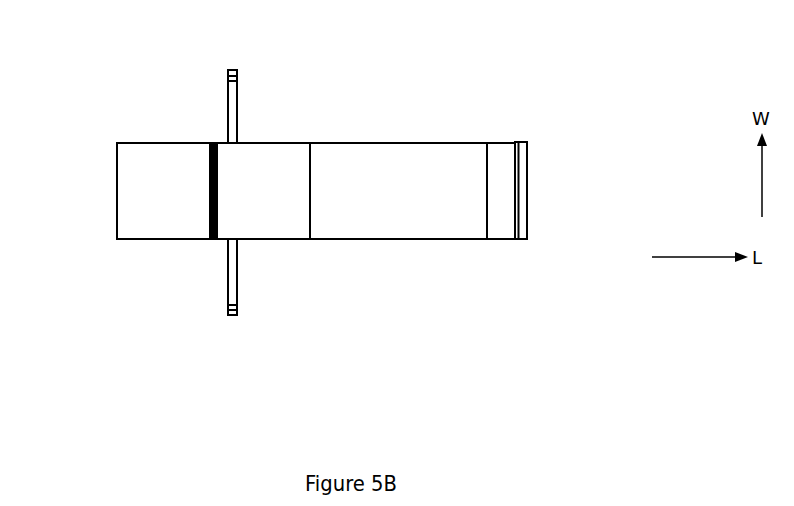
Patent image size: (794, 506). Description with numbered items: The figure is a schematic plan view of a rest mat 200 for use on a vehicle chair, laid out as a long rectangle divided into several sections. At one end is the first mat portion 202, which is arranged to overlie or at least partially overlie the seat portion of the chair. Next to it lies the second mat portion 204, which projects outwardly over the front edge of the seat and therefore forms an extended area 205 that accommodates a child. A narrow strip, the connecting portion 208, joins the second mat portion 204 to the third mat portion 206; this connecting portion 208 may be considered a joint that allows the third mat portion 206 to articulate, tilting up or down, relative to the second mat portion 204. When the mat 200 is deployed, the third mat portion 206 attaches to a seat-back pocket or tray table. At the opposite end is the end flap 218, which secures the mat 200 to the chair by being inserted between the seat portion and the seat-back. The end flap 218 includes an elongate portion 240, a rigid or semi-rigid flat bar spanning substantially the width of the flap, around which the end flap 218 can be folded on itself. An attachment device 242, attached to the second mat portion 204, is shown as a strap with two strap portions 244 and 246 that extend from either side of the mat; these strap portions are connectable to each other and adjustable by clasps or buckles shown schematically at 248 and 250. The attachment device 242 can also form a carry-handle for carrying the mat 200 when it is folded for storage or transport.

The mat 200 is at (304, 190).
The first mat portion 202 is at (361, 160).
The second mat portion 204 is at (266, 160).
The extended area 205 is at (347, 80).
The third mat portion 206 is at (141, 227).
The connecting portion 208 is at (208, 232).
The end flap 218 is at (498, 221).
The elongate portion 240 is at (522, 165).
The attachment device 242 is at (205, 84).
The strap portion 244 is at (234, 110).
The strap portion 246 is at (237, 285).
The clasp or buckle 248 is at (237, 70).
The clasp or buckle 250 is at (230, 312).